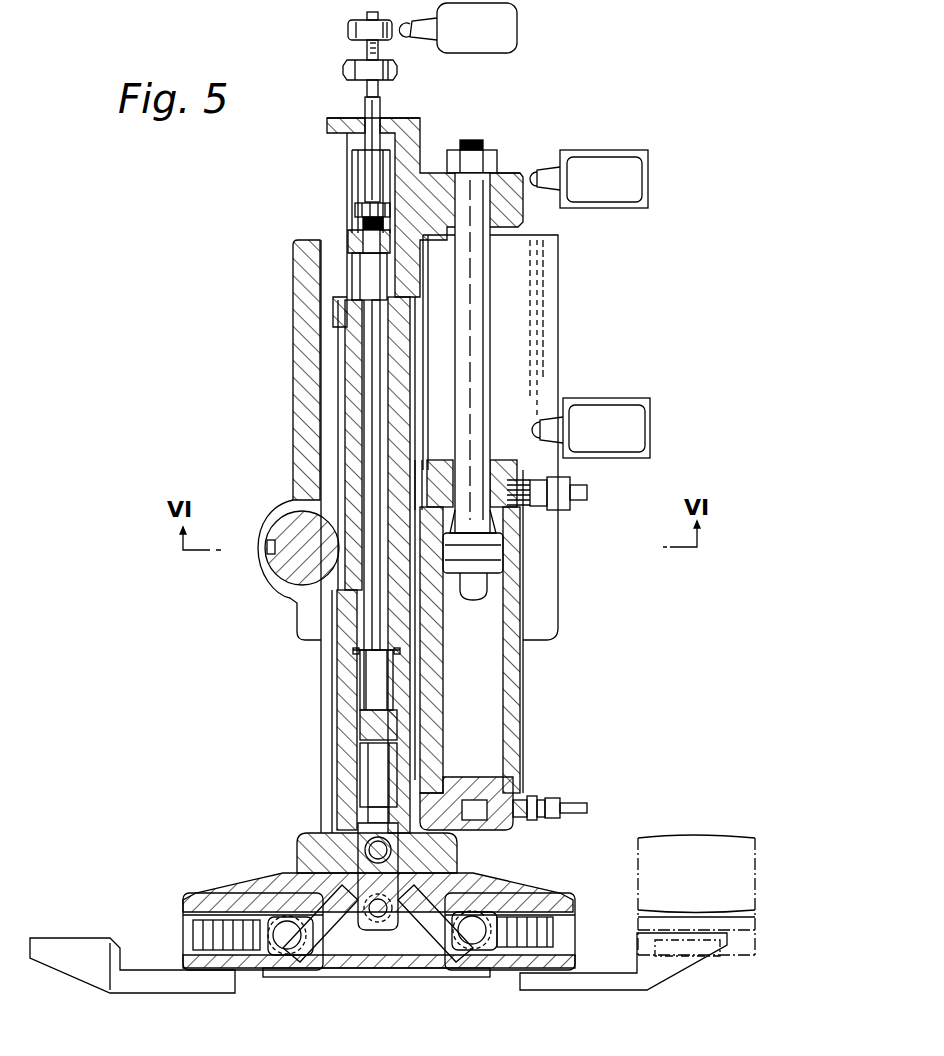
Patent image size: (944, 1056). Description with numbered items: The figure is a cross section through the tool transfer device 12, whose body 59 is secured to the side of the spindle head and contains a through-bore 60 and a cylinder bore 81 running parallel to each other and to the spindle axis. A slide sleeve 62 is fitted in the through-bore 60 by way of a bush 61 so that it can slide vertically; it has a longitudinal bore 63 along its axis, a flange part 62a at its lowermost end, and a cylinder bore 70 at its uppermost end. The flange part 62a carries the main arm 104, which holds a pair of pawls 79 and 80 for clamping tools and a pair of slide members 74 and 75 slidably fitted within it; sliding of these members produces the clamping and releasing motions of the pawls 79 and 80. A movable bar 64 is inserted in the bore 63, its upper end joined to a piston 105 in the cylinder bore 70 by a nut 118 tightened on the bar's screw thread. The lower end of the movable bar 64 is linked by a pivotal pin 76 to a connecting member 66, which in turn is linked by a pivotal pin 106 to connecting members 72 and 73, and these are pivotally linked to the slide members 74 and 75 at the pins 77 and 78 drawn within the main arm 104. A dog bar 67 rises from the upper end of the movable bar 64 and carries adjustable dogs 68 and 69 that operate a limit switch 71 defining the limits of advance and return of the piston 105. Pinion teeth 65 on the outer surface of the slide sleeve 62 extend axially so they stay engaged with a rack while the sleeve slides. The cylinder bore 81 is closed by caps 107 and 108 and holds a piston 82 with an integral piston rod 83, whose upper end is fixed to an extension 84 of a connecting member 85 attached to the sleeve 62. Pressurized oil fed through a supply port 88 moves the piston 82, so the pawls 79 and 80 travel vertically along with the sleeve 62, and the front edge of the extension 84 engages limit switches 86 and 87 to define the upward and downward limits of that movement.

The tool transfer device 12 is at (347, 983).
The body 59 is at (300, 408).
The through-bore 60 is at (337, 680).
The bush 61 is at (337, 650).
The slide sleeve 62 is at (347, 362).
The flange part 62a is at (302, 840).
The longitudinal bore 63 is at (360, 440).
The movable bar 64 is at (367, 478).
The pinion teeth 65 is at (340, 382).
The connecting member 66 is at (303, 872).
The dog bar 67 is at (365, 105).
The dog 68 is at (347, 63).
The dog 69 is at (348, 32).
The cylinder bore 70 is at (357, 192).
The limit switch 71 is at (510, 37).
The connecting member 72 is at (300, 890).
The connecting member 73 is at (470, 893).
The slide member 74 is at (203, 928).
The slide member 75 is at (553, 928).
The pivotal pin 76 is at (377, 847).
The left pivot pin 77 is at (287, 943).
The right pivot pin 78 is at (472, 940).
The pawl 79 is at (93, 978).
The pawl 80 is at (650, 963).
The cylinder bore 81 is at (506, 730).
The piston 82 is at (520, 567).
The piston rod 83 is at (468, 350).
The extension 84 is at (513, 212).
The connecting member 85 is at (327, 145).
The limit switch 86 is at (635, 172).
The limit switch 87 is at (633, 432).
The supply port 88 is at (520, 505).
The main arm 104 is at (430, 973).
The piston 105 is at (352, 230).
The pivotal pin 106 is at (378, 915).
The cap 107 is at (522, 470).
The cap 108 is at (510, 825).
The nut 118 is at (355, 210).